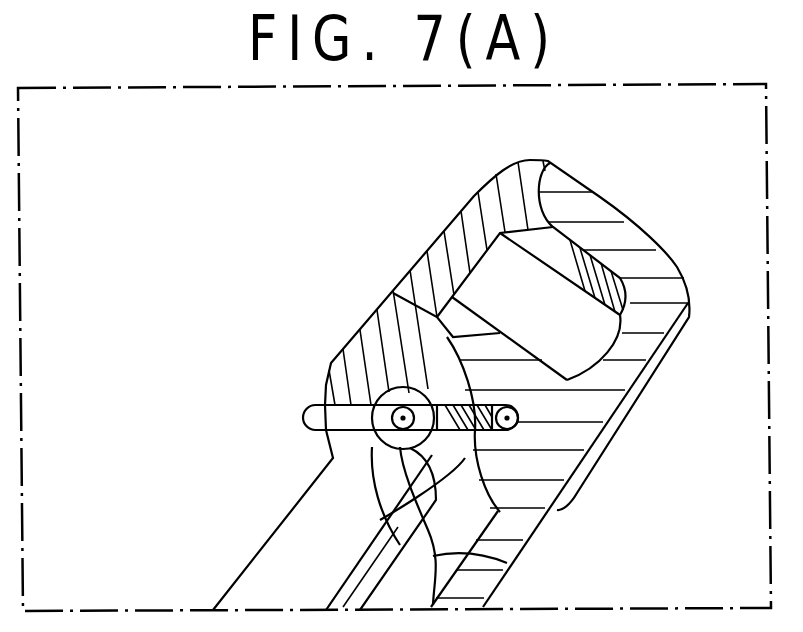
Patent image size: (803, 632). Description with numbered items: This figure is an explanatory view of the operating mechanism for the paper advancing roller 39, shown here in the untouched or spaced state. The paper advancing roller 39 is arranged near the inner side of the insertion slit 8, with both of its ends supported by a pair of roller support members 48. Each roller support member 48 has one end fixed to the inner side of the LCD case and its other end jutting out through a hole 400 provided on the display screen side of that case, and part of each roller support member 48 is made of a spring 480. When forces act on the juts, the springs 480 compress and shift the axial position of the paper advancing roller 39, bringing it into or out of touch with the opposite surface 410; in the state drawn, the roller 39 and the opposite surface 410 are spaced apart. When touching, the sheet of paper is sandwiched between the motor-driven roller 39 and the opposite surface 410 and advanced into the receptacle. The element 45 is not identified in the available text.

The insertion slit 8 is at (372, 322).
The side wall 45 is at (513, 565).
The roller support member 48 is at (307, 414).
The spring 480 is at (468, 400).
The hole 400 is at (335, 432).
The paper advancing roller 39 is at (400, 462).
The opposite surface 410 is at (380, 520).